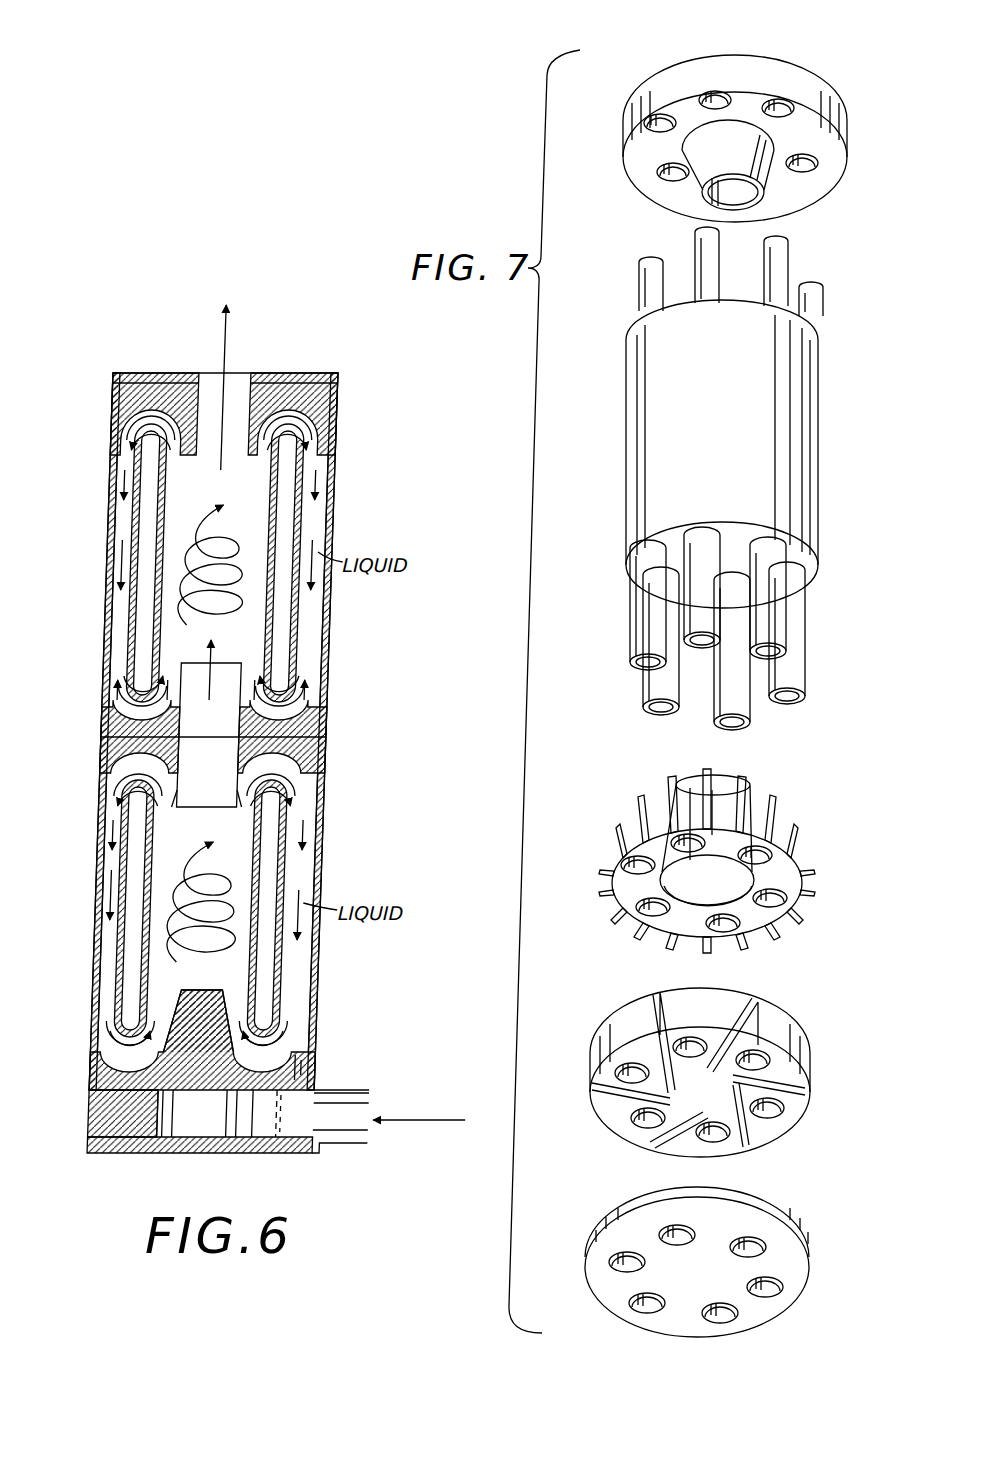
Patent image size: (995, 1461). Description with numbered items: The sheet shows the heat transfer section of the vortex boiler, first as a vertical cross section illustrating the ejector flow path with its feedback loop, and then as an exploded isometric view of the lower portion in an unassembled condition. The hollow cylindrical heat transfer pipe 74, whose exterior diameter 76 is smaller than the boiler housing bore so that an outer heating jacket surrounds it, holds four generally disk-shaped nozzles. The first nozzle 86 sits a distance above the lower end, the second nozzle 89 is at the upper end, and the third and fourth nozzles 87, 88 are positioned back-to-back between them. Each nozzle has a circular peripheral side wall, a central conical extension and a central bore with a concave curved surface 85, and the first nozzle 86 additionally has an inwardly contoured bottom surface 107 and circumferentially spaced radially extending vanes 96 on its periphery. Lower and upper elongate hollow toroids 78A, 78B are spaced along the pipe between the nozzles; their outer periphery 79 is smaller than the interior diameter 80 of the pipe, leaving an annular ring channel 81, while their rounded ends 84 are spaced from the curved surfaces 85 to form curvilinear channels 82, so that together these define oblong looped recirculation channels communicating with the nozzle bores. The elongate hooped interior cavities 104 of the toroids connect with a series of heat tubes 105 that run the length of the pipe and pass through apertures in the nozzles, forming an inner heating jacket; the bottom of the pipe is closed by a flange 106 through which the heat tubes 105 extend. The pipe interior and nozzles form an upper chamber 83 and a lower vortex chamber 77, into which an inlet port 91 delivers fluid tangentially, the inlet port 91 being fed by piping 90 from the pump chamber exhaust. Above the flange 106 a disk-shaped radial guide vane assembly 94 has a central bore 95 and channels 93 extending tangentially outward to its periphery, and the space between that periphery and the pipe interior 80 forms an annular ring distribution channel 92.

In FIG. 6, the heat transfer pipe 74 is at (108, 939).
In FIG. 6, the exterior diameter of heat transfer pipe 76 is at (113, 898).
In FIG. 6, the lower vortex chamber 77 is at (178, 1113).
In FIG. 6, the lower elongate hollow toroid 78A is at (306, 950).
In FIG. 7, the lower elongate hollow toroid 78A is at (728, 424).
In FIG. 6, the upper elongate hollow toroid 78B is at (308, 603).
In FIG. 6, the outer periphery of toroids 79 is at (311, 625).
In FIG. 7, the outer periphery of toroids 79 is at (830, 445).
In FIG. 6, the interior diameter of heat transfer pipe 80 is at (116, 606).
In FIG. 6, the annular ring channel 81 is at (121, 630).
In FIG. 6, the curvilinear channels 82 is at (283, 390).
In FIG. 6, the upper chamber 83 is at (251, 885).
In FIG. 6, the rounded ends of toroids 84 is at (150, 447).
In FIG. 6, the concave curved surface 85 is at (322, 428).
In FIG. 7, the concave curved surface 85 is at (648, 195).
In FIG. 6, the first disk-shaped nozzle 86 is at (210, 1005).
In FIG. 7, the first disk-shaped nozzle 86 is at (628, 896).
In FIG. 6, the third disk-shaped nozzle 87 is at (234, 668).
In FIG. 6, the fourth disk-shaped nozzle 88 is at (199, 795).
In FIG. 7, the fourth disk-shaped nozzle 88 is at (830, 195).
In FIG. 6, the second disk-shaped nozzle 89 is at (212, 380).
In FIG. 6, the piping 90 is at (356, 1153).
In FIG. 6, the inlet port 91 is at (335, 1103).
In FIG. 6, the annular ring distribution channel 92 is at (273, 1150).
In FIG. 6, the channels of guide vane assembly 93 is at (218, 1143).
In FIG. 7, the channels of guide vane assembly 93 is at (648, 1015).
In FIG. 6, the radial guide vane assembly 94 is at (113, 1105).
In FIG. 7, the radial guide vane assembly 94 is at (812, 1060).
In FIG. 7, the central bore of guide vane assembly 95 is at (718, 1100).
In FIG. 6, the radially extending vanes 96 is at (353, 1065).
In FIG. 7, the radially extending vanes 96 is at (648, 795).
In FIG. 6, the elongate hooped interior cavities 104 is at (289, 502).
In FIG. 6, the heat tubes 105 is at (122, 415).
In FIG. 7, the heat tubes 105 is at (660, 270).
In FIG. 6, the flange 106 is at (107, 1147).
In FIG. 7, the flange 106 is at (805, 1265).
In FIG. 6, the inwardly contoured bottom surface 107 is at (252, 1075).
In FIG. 7, the inwardly contoured bottom surface 107 is at (690, 905).